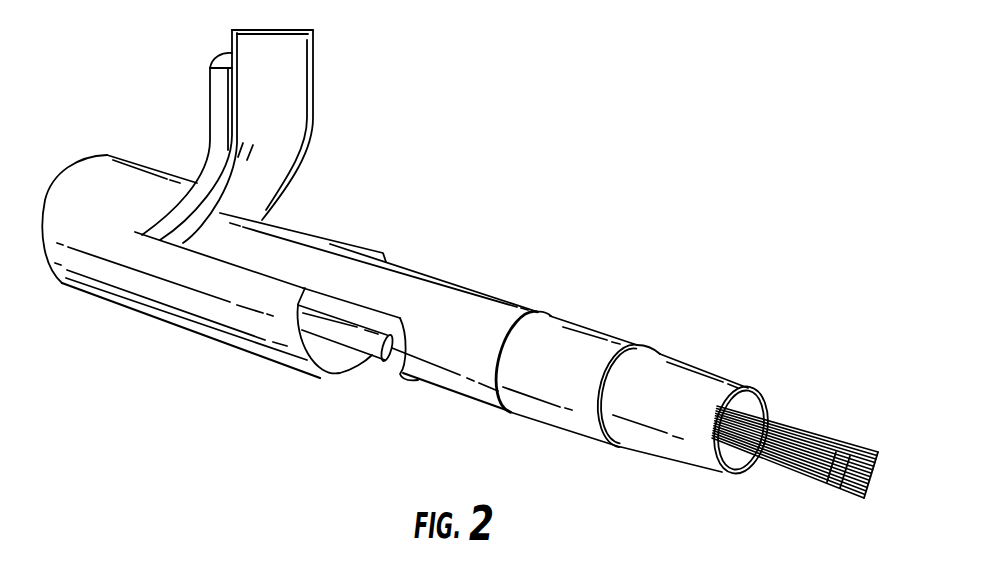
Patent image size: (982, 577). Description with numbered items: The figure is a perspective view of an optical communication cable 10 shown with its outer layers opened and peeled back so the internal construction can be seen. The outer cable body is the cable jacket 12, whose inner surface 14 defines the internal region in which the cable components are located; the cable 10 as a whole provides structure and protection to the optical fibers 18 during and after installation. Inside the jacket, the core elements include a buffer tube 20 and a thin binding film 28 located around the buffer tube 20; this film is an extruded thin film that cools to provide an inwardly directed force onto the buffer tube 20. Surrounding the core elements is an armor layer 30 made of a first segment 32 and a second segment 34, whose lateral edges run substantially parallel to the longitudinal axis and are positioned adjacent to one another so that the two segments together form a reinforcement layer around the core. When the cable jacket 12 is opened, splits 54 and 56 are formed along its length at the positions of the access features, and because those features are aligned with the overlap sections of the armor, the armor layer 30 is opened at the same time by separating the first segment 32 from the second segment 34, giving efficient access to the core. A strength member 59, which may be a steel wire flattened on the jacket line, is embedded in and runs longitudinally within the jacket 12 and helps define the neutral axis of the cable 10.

The cable 10 is at (486, 75).
The cable jacket 12 is at (87, 180).
The inner surface 14 is at (228, 108).
The optical fibers 18 is at (807, 440).
The buffer tube 20 is at (573, 335).
The binding film 28 is at (460, 363).
The armor layer 30 is at (272, 43).
The first segment 32 is at (282, 128).
The second segment 34 is at (380, 310).
The split 54 is at (55, 278).
The split 56 is at (265, 213).
The strength member 59 is at (370, 353).